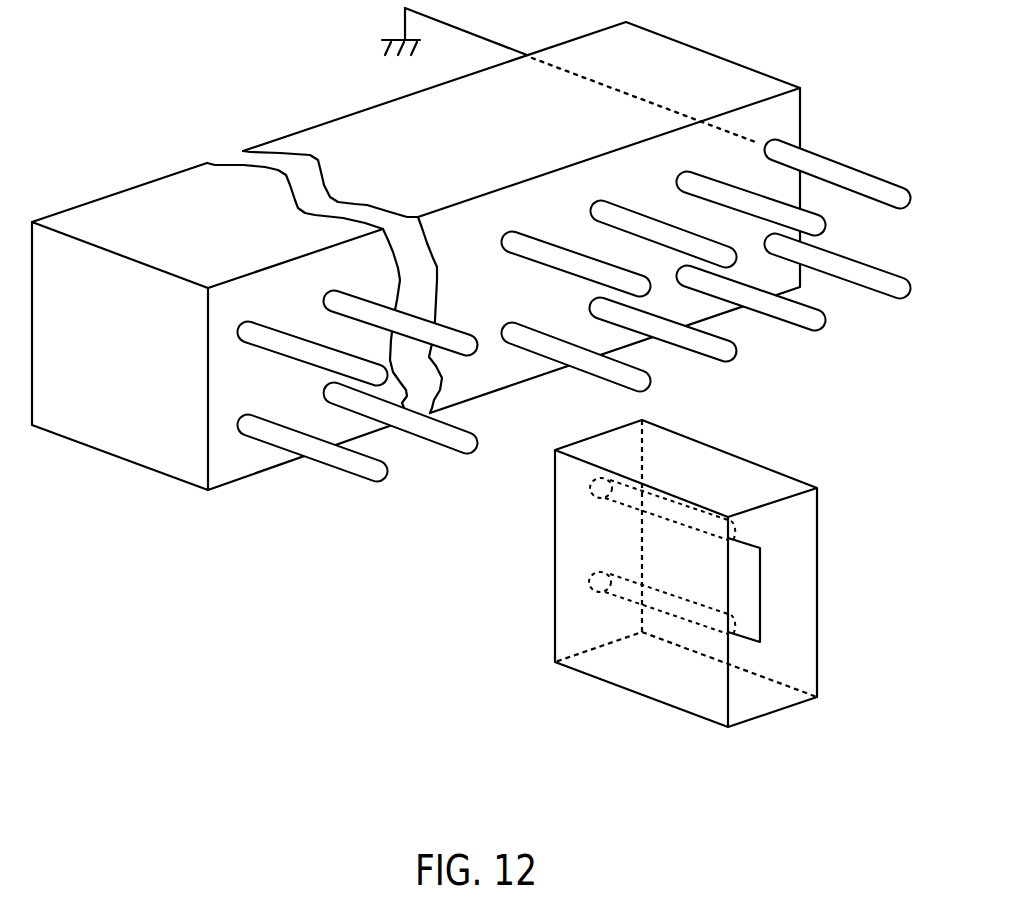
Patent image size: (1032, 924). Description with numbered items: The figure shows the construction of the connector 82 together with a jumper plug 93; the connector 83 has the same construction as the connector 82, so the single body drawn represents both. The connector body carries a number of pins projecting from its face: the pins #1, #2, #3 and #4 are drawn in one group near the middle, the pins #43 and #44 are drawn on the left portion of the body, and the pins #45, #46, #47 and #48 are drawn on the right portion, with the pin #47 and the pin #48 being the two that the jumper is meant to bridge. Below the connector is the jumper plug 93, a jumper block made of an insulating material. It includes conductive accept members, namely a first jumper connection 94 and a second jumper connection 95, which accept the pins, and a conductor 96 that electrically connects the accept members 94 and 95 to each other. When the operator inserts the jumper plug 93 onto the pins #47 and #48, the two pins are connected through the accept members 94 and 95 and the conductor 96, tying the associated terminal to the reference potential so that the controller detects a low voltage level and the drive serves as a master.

The connector 82 is at (466, 249).
The connector 83 is at (466, 249).
The jumper plug 93 is at (715, 562).
The first jumper connection 94 is at (625, 495).
The second jumper connection 95 is at (617, 595).
The conductor 96 is at (762, 592).
The pin 1 is at (659, 234).
The pin 2 is at (659, 329).
The pin 3 is at (571, 267).
The pin 4 is at (570, 357).
The pin 43 is at (305, 355).
The pin 44 is at (298, 448).
The pin 45 is at (742, 206).
The pin 46 is at (742, 299).
The pin 47 is at (826, 174).
The pin 48 is at (826, 267).